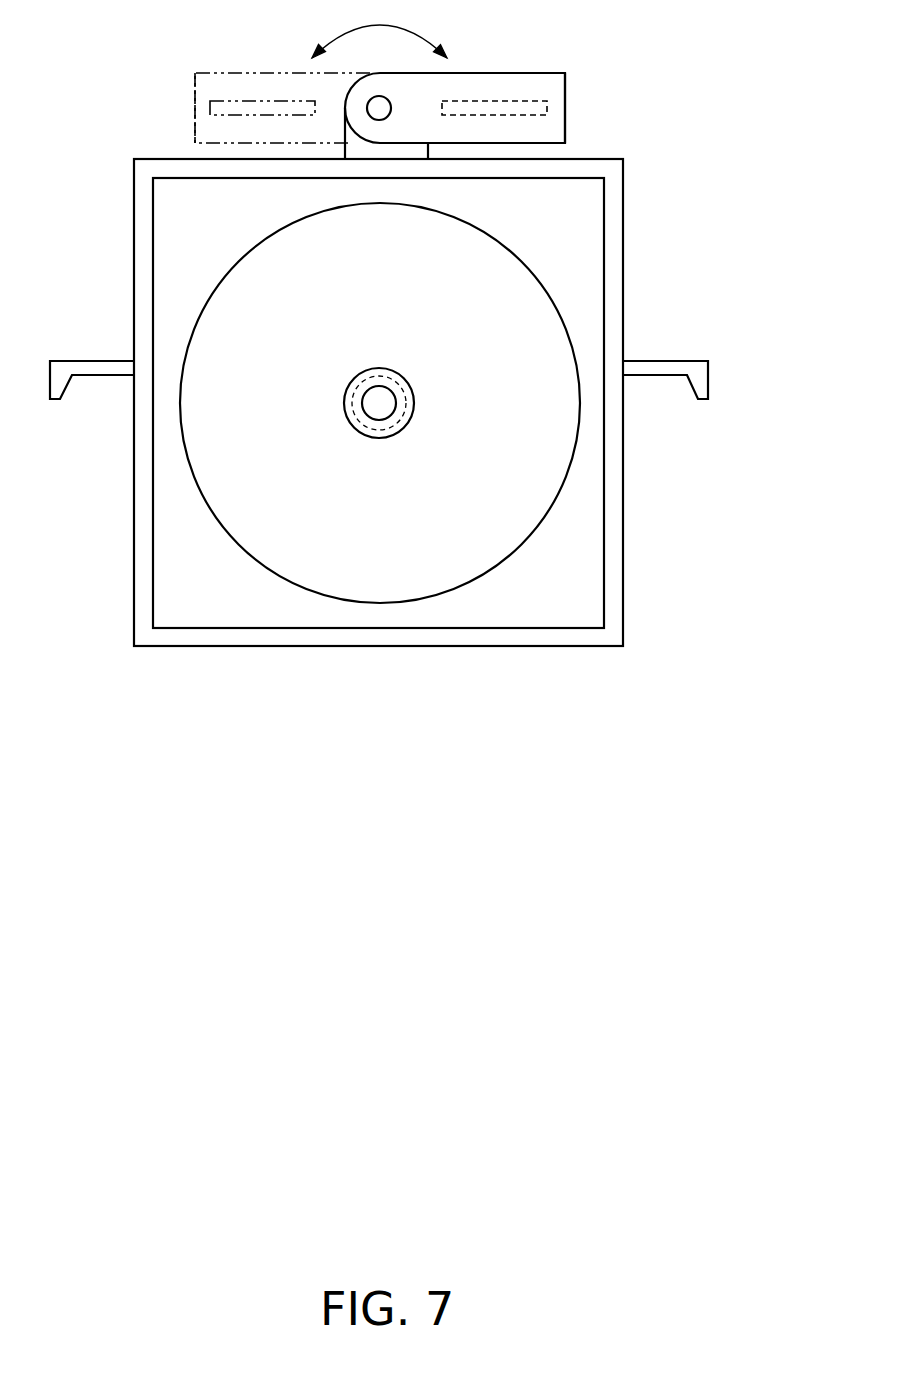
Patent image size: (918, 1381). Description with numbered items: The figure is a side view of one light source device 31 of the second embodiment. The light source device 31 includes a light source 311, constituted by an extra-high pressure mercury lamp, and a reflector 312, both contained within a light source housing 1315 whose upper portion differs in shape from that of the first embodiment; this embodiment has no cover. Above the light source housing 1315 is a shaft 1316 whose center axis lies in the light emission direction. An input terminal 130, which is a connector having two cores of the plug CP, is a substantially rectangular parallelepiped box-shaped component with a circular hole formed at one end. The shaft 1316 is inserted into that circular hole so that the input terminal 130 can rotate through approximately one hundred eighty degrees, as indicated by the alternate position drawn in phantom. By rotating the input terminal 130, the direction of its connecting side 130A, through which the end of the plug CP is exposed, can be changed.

The light source device 31 is at (387, 328).
The light source housing 1315 is at (615, 277).
The reflector 312 is at (532, 485).
The light source 311 is at (414, 412).
The input terminal 130 is at (377, 110).
The connecting side 130A is at (567, 95).
The plug CP is at (522, 100).
The shaft 1316 is at (378, 110).